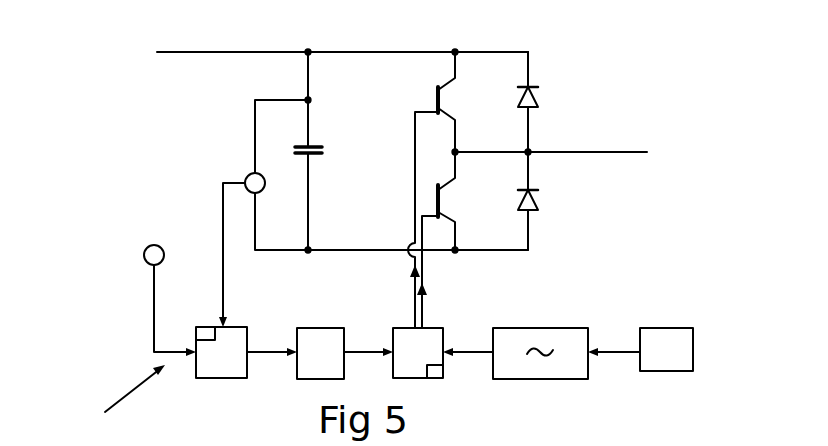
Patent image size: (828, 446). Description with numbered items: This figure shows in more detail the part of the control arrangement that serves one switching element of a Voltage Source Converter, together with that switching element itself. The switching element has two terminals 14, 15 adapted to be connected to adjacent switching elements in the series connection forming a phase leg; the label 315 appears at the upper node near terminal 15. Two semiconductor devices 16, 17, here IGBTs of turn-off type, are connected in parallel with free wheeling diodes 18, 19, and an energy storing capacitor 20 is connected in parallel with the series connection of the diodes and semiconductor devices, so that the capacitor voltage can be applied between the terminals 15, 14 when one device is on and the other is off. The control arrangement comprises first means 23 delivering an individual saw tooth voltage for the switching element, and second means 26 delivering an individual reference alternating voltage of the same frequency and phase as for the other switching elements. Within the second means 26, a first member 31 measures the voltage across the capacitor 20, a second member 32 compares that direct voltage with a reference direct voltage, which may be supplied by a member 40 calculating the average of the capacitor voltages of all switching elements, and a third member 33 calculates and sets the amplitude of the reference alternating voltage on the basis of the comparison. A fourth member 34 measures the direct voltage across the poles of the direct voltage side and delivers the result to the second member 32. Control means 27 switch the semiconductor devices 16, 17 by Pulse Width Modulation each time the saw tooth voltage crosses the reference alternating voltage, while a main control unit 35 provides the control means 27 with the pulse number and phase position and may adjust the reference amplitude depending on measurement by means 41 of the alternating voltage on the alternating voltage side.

The terminal 14 is at (562, 152).
The terminal 15 is at (246, 52).
The supply node 315 is at (480, 39).
The semiconductor device 16 is at (436, 100).
The semiconductor device 17 is at (436, 195).
The diode 18 is at (540, 96).
The diode 19 is at (538, 202).
The energy storing capacitor 20 is at (312, 148).
The first means 23 is at (443, 374).
The second means 26 is at (121, 404).
The control means 27 is at (430, 330).
The first member 31 is at (248, 176).
The second member 32 is at (232, 327).
The third member 33 is at (322, 328).
The fourth member 34 is at (160, 246).
The main control unit 35 is at (532, 327).
The member 40 is at (202, 325).
The means 41 is at (660, 328).